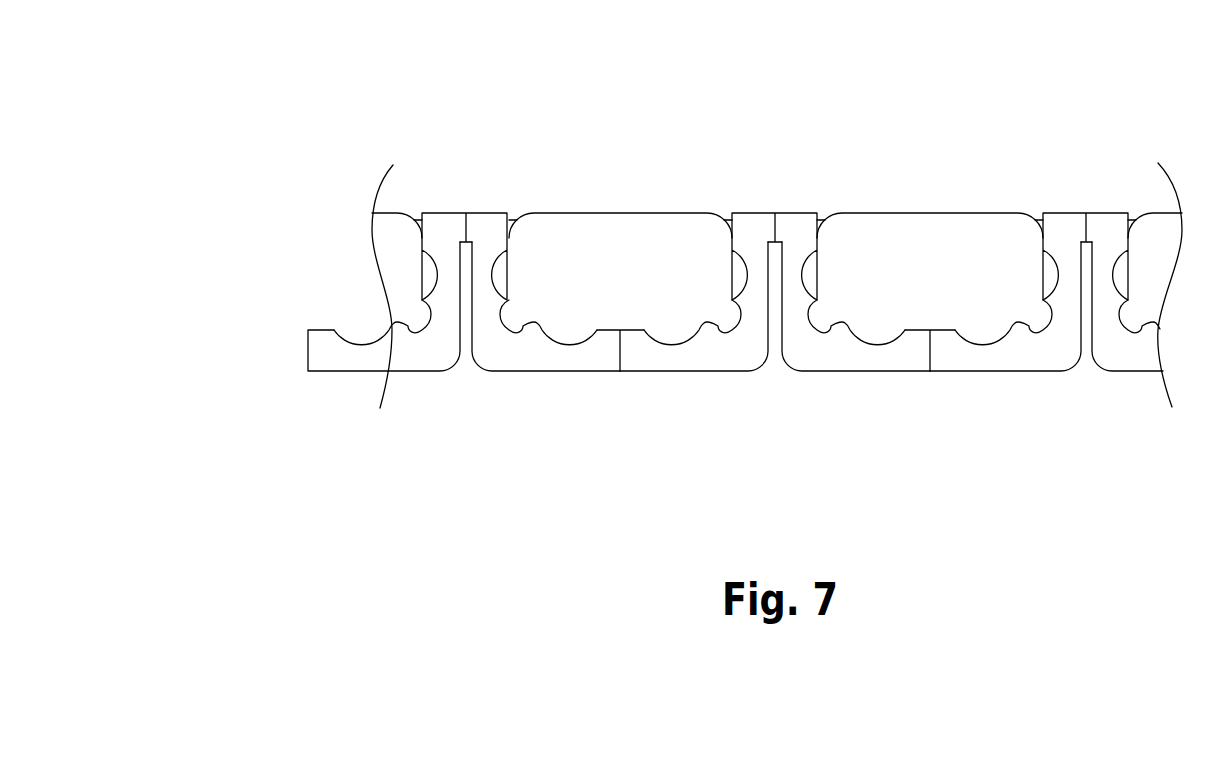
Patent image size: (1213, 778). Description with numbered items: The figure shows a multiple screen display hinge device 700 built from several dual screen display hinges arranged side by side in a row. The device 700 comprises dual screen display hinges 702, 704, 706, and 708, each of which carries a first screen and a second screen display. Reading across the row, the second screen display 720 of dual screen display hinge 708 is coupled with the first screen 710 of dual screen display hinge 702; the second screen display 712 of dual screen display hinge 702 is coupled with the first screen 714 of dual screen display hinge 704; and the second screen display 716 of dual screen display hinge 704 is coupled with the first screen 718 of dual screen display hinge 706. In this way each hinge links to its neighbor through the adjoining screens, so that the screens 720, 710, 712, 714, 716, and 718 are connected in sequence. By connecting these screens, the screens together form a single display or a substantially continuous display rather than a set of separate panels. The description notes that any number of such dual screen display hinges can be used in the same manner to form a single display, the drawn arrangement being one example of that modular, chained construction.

The multiple screen display hinge device 700 is at (199, 82).
The dual screen display hinge 702 is at (645, 287).
The dual screen display hinge 704 is at (955, 287).
The dual screen display hinge 706 is at (1148, 250).
The dual screen display hinge 708 is at (393, 253).
The first screen 710 is at (550, 372).
The second screen display 712 is at (662, 372).
The first screen 714 is at (893, 372).
The second screen display 716 is at (1025, 373).
The first screen 718 is at (1128, 373).
The second screen display 720 is at (438, 372).